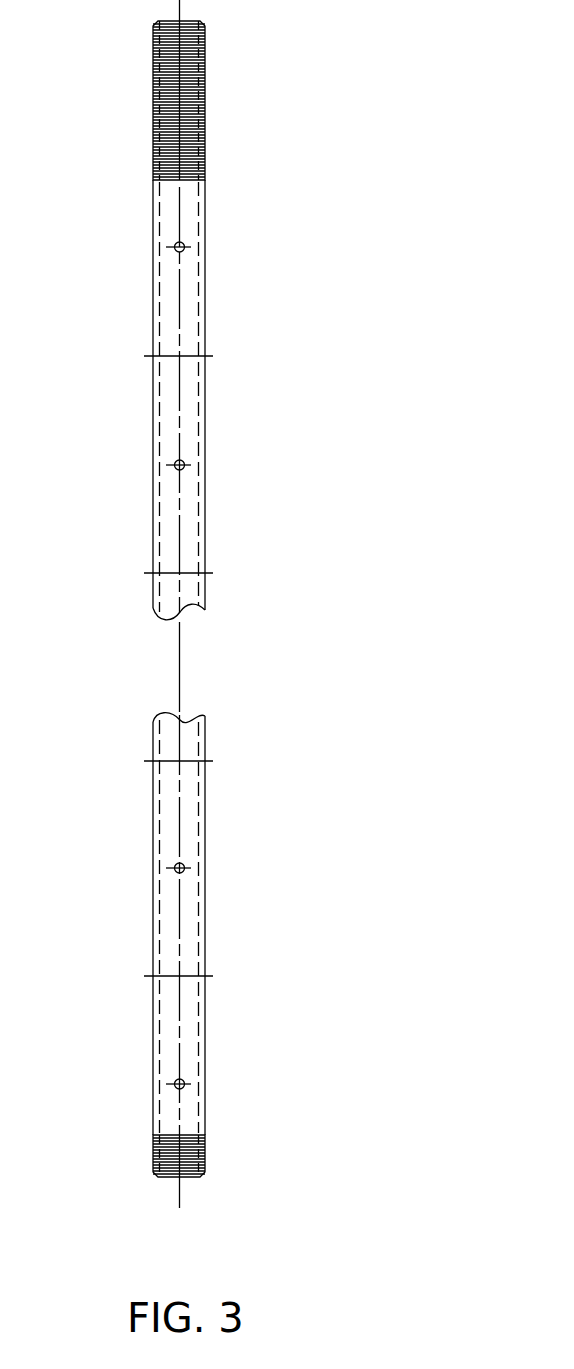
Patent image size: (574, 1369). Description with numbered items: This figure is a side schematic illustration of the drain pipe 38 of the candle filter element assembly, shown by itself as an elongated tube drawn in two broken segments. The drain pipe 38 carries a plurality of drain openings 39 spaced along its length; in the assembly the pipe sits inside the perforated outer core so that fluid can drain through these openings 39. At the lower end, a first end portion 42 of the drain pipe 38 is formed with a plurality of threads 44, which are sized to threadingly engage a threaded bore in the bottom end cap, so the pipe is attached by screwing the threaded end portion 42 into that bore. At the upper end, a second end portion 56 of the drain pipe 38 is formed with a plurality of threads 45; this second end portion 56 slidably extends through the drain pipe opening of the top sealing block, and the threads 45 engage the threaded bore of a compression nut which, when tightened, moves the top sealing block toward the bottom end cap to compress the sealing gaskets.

The drain pipe 38 is at (264, 370).
The drain openings 39 is at (184, 468).
The first end portion 42 is at (231, 1141).
The threads 44 is at (215, 1135).
The threads 45 is at (203, 40).
The second end portion 56 is at (231, 96).